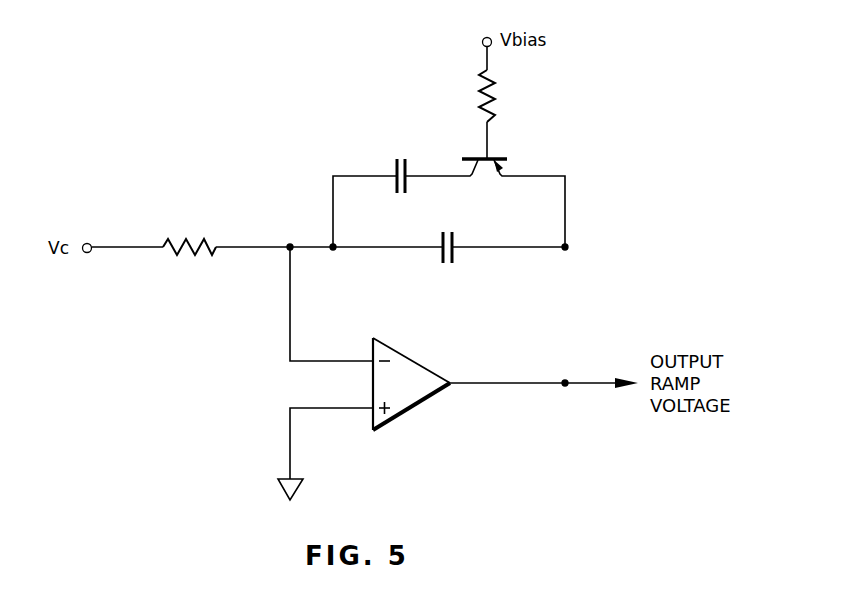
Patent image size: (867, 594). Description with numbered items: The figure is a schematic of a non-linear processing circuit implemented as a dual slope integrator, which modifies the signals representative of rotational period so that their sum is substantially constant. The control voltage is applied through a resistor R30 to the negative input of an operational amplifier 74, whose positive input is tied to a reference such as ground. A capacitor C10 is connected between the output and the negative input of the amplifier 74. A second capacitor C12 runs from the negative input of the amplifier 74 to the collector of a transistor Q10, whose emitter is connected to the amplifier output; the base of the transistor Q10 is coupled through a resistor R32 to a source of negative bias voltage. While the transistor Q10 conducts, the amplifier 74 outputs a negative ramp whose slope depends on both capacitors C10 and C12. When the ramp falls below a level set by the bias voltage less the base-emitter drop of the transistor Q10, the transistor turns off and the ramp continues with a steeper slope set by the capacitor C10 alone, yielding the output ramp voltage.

The operational amplifier 74 is at (413, 407).
The resistor R30 is at (189, 234).
The resistor R32 is at (506, 96).
The capacitor C10 is at (449, 237).
The capacitor C12 is at (398, 189).
The transistor Q10 is at (513, 184).